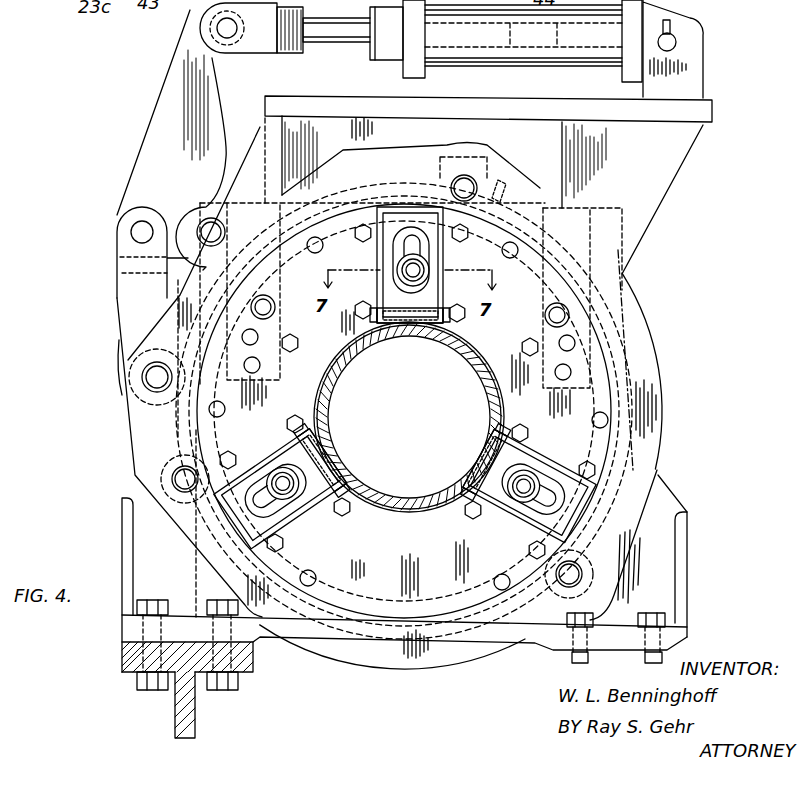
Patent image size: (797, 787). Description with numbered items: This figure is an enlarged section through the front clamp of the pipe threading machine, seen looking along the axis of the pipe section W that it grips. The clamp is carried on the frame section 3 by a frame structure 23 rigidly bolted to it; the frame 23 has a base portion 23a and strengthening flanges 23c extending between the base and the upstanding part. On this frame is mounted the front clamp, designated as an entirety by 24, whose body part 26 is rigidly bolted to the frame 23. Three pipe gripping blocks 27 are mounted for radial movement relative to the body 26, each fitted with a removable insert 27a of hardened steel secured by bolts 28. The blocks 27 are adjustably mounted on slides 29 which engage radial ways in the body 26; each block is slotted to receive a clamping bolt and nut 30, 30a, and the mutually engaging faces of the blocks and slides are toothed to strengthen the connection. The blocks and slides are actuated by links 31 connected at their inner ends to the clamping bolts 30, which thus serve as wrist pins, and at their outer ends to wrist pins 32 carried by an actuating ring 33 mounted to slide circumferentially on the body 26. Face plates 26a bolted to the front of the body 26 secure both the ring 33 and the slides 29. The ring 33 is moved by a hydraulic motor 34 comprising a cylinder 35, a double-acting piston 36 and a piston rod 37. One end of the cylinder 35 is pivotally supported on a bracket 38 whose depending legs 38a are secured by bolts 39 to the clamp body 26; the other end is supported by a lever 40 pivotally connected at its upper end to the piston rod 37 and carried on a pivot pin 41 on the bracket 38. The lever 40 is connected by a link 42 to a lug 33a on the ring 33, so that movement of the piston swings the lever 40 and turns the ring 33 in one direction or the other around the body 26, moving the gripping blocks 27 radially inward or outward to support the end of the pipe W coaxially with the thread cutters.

The frame section 3 is at (175, 716).
The frame structure 23 is at (663, 478).
The base portion 23a is at (315, 612).
The strengthening flanges 23c is at (716, 542).
The front clamp 24 is at (672, 260).
The body part 26 is at (640, 400).
The face plates 26a is at (383, 680).
The pipe gripping blocks 27 is at (432, 295).
The removable inserts 27a is at (535, 441).
The bolts 28 is at (446, 322).
The slides 29 is at (400, 155).
The clamping bolt 30 is at (390, 267).
The nut 30a is at (428, 268).
The links 31 is at (508, 188).
The wrist pins 32 is at (466, 185).
The actuating ring 33 is at (158, 330).
The lug 33a is at (122, 432).
The hydraulic motor 34 is at (390, 62).
The cylinder 35 is at (478, 60).
The double-acting piston 36 is at (566, 48).
The piston rod 37 is at (330, 42).
The bracket 38 is at (668, 157).
The depending legs 38a is at (278, 364).
The bolts 39 is at (258, 335).
The lever 40 is at (160, 127).
The pivot pin 41 is at (205, 228).
The link 42 is at (130, 295).
The pipe section W is at (338, 372).